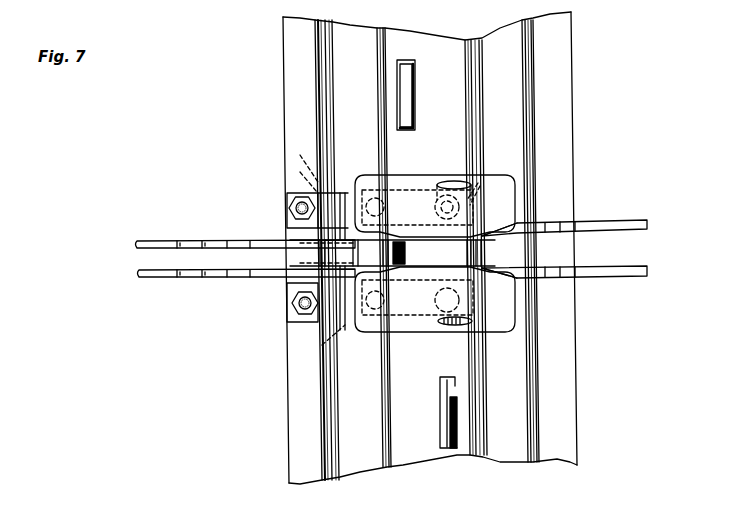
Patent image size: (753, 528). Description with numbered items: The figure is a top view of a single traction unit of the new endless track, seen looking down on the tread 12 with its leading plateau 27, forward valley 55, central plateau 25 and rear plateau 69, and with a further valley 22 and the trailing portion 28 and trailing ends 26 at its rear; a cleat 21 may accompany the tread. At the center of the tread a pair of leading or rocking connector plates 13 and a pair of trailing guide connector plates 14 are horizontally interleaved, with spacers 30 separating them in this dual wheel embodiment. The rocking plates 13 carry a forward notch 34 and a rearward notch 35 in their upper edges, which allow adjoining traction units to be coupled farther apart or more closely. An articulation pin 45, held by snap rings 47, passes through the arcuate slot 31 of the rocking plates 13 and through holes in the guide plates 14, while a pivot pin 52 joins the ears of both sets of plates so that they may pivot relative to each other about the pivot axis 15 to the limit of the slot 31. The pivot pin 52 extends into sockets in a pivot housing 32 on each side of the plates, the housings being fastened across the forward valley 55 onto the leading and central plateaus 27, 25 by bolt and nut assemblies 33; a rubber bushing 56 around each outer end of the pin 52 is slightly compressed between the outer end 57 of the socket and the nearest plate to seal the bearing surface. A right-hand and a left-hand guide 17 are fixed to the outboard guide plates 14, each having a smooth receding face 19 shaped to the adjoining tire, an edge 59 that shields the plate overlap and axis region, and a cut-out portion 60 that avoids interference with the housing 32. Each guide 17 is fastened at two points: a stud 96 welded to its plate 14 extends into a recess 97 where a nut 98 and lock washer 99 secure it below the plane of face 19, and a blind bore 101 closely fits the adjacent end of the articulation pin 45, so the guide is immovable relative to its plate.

The tread 12 is at (448, 75).
The leading connector plates 13 is at (143, 242).
The trailing connector plates 14 is at (640, 220).
The pivot axis 15 is at (347, 200).
The guide 17 is at (468, 325).
The receding face 19 is at (410, 185).
The cleat 21 is at (426, 412).
The valley 22 is at (435, 247).
The central plateau 25 is at (425, 259).
The trailing ends 26 is at (601, 238).
The leading plateau 27 is at (280, 250).
The trailing portion 28 is at (581, 241).
The spacers 30 is at (408, 251).
The arcuate slot 31 is at (330, 240).
The pivot housing 32 is at (288, 224).
The bolt and nut assemblies 33 is at (288, 202).
The forward notch 34 is at (190, 242).
The rearward notch 35 is at (230, 242).
The articulation pin 45 is at (435, 206).
The snap rings 47 is at (435, 299).
The pivot pin 52 is at (300, 155).
The forward valley 55 is at (344, 250).
The rubber bushing 56 is at (300, 172).
The outer end of socket 57 is at (335, 190).
The edge 59 is at (490, 233).
The cut-out portion 60 is at (322, 345).
The rear plateau 69 is at (569, 241).
The stud 96 is at (476, 212).
The recess 97 is at (455, 178).
The nut 98 is at (478, 183).
The lock washer 99 is at (480, 186).
The blind bore 101 is at (402, 328).